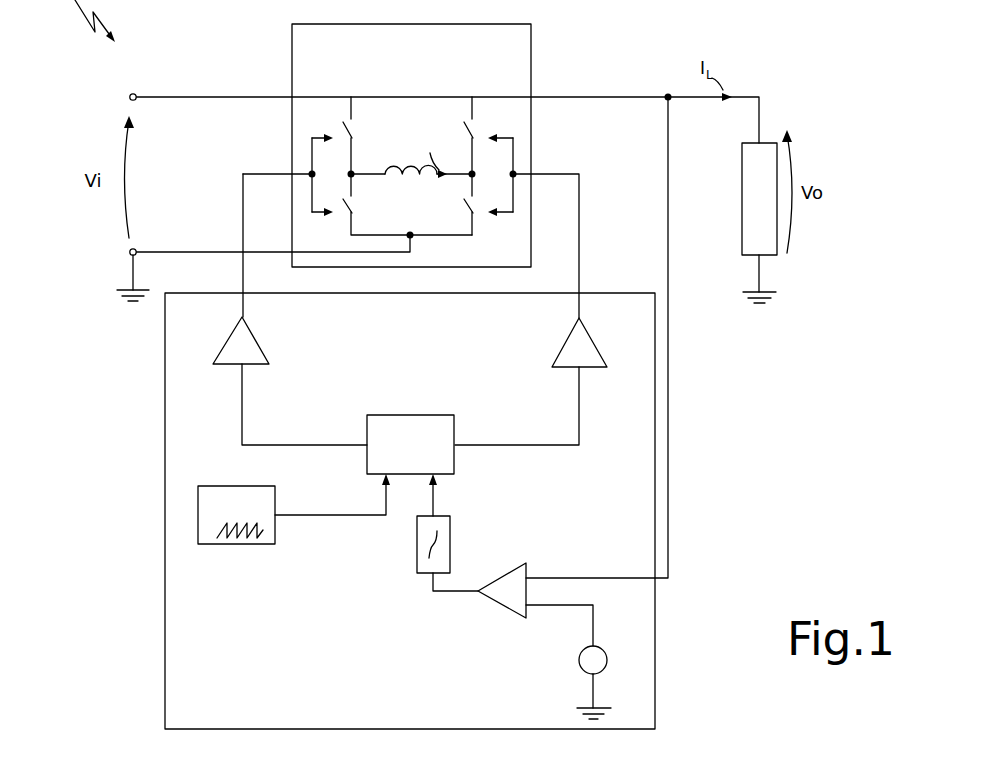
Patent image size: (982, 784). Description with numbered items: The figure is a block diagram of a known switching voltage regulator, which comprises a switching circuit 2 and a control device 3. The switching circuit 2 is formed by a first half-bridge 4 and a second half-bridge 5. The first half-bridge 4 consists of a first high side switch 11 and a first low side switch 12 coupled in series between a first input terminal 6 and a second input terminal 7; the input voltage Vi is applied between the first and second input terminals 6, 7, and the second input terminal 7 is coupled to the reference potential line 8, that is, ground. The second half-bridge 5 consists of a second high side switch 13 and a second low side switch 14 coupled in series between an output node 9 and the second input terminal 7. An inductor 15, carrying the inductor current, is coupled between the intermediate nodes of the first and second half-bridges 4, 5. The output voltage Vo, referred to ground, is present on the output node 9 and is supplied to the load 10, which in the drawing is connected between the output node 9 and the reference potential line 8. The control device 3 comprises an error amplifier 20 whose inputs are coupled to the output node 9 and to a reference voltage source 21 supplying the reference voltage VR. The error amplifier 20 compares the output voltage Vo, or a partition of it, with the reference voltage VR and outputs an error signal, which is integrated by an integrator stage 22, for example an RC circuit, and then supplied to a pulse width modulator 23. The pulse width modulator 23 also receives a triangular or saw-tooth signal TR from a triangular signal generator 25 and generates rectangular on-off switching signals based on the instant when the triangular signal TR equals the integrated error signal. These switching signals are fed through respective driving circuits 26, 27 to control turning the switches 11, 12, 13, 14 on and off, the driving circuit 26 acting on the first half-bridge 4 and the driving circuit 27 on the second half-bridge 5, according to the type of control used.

The switching circuit 2 is at (522, 58).
The control device 3 is at (170, 522).
The first half-bridge 4 is at (347, 90).
The second half-bridge 5 is at (476, 90).
The first input terminal 6 is at (136, 93).
The second input terminal 7 is at (128, 252).
The reference potential line 8 is at (118, 291).
The output node 9 is at (666, 94).
The load 10 is at (740, 165).
The first high side switch 11 is at (355, 131).
The first low side switch 12 is at (355, 208).
The second high side switch 13 is at (466, 131).
The second low side switch 14 is at (466, 208).
The inductor 15 is at (407, 165).
The error amplifier 20 is at (490, 603).
The reference voltage source 21 is at (580, 664).
The integrator stage 22 is at (450, 522).
The PWM modulator 23 is at (457, 460).
The triangular signal generator 25 is at (267, 547).
The driving circuit 26 is at (257, 350).
The driving circuit 27 is at (572, 350).